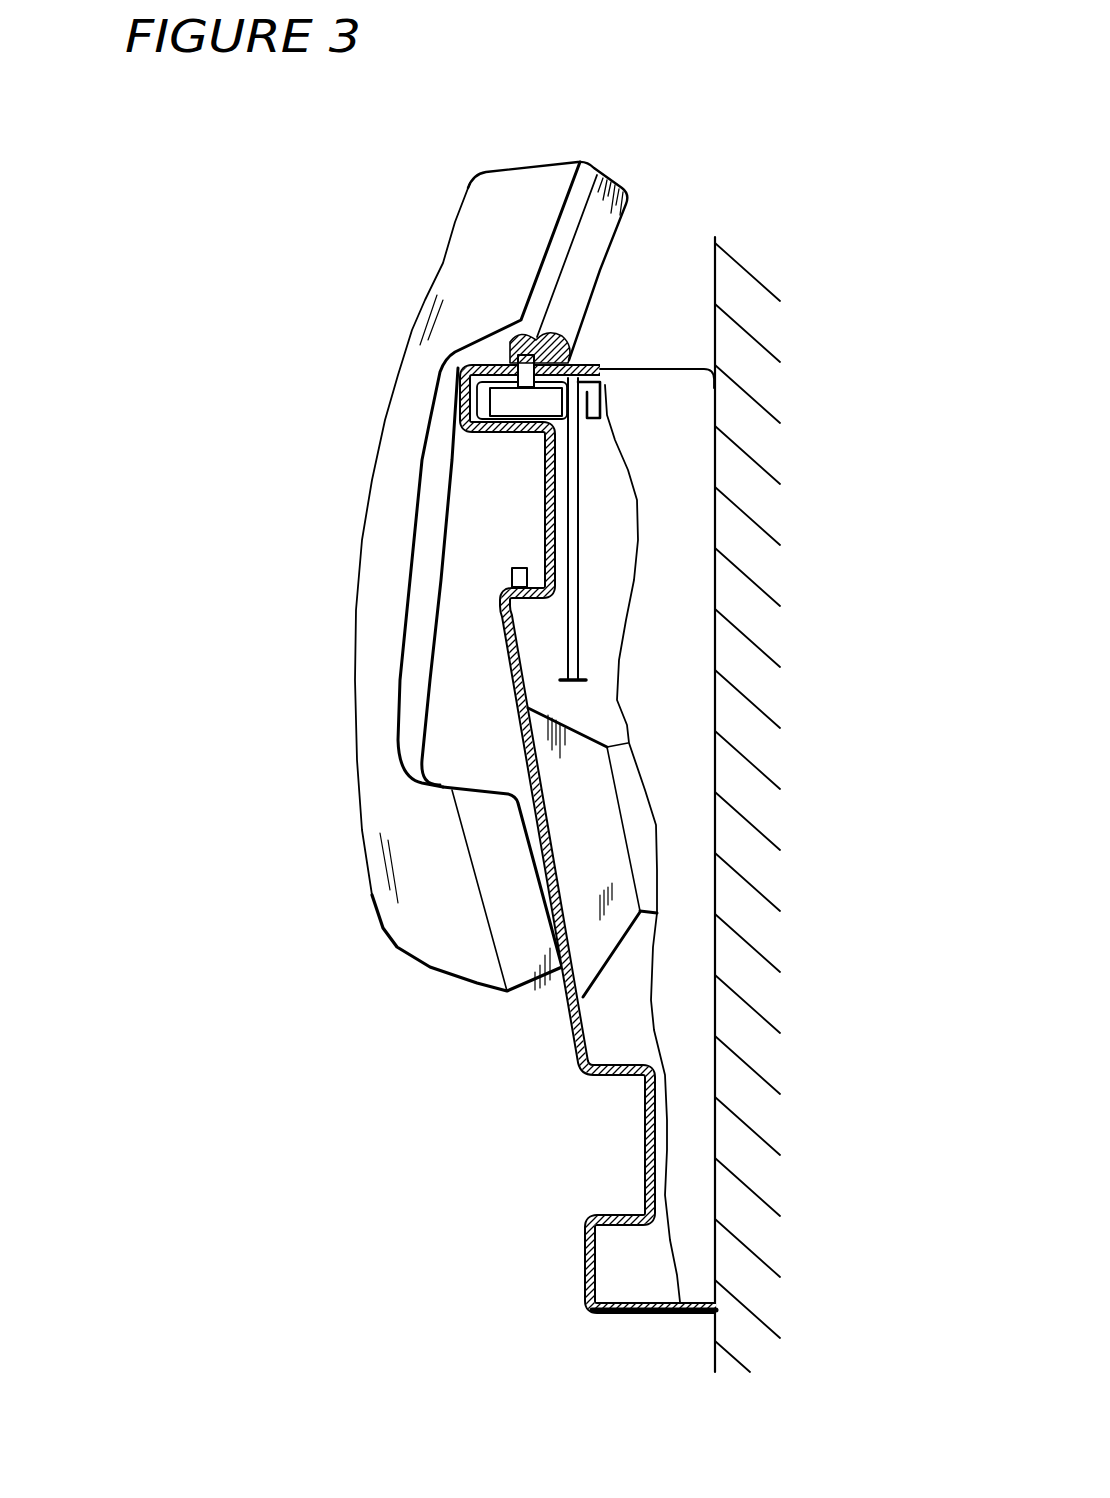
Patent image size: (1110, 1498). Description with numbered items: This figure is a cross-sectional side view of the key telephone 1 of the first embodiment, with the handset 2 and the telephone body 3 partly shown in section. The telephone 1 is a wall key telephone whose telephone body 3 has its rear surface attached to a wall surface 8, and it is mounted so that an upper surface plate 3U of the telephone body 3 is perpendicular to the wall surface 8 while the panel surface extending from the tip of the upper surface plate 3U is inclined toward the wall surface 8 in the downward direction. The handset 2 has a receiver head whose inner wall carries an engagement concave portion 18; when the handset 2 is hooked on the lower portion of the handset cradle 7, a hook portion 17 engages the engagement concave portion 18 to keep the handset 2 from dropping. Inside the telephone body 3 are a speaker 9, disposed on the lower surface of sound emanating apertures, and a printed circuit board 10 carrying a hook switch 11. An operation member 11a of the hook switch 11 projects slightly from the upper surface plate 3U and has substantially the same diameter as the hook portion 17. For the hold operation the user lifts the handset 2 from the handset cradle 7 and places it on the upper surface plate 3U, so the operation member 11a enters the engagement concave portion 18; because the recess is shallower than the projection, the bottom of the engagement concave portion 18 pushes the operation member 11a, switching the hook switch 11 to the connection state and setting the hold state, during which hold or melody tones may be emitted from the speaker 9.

The key telephone 1 is at (491, 136).
The handset 2 is at (443, 262).
The telephone body 3 is at (581, 1252).
The upper surface plate 3U is at (618, 367).
The handset cradle 7 is at (513, 487).
The wall surface 8 is at (718, 1328).
The speaker 9 is at (610, 845).
The printed circuit board 10 is at (578, 625).
The hook switch 11 is at (510, 402).
The operation member 11a is at (520, 337).
The hook portion 17 is at (507, 577).
The engagement concave portion 18 is at (601, 180).